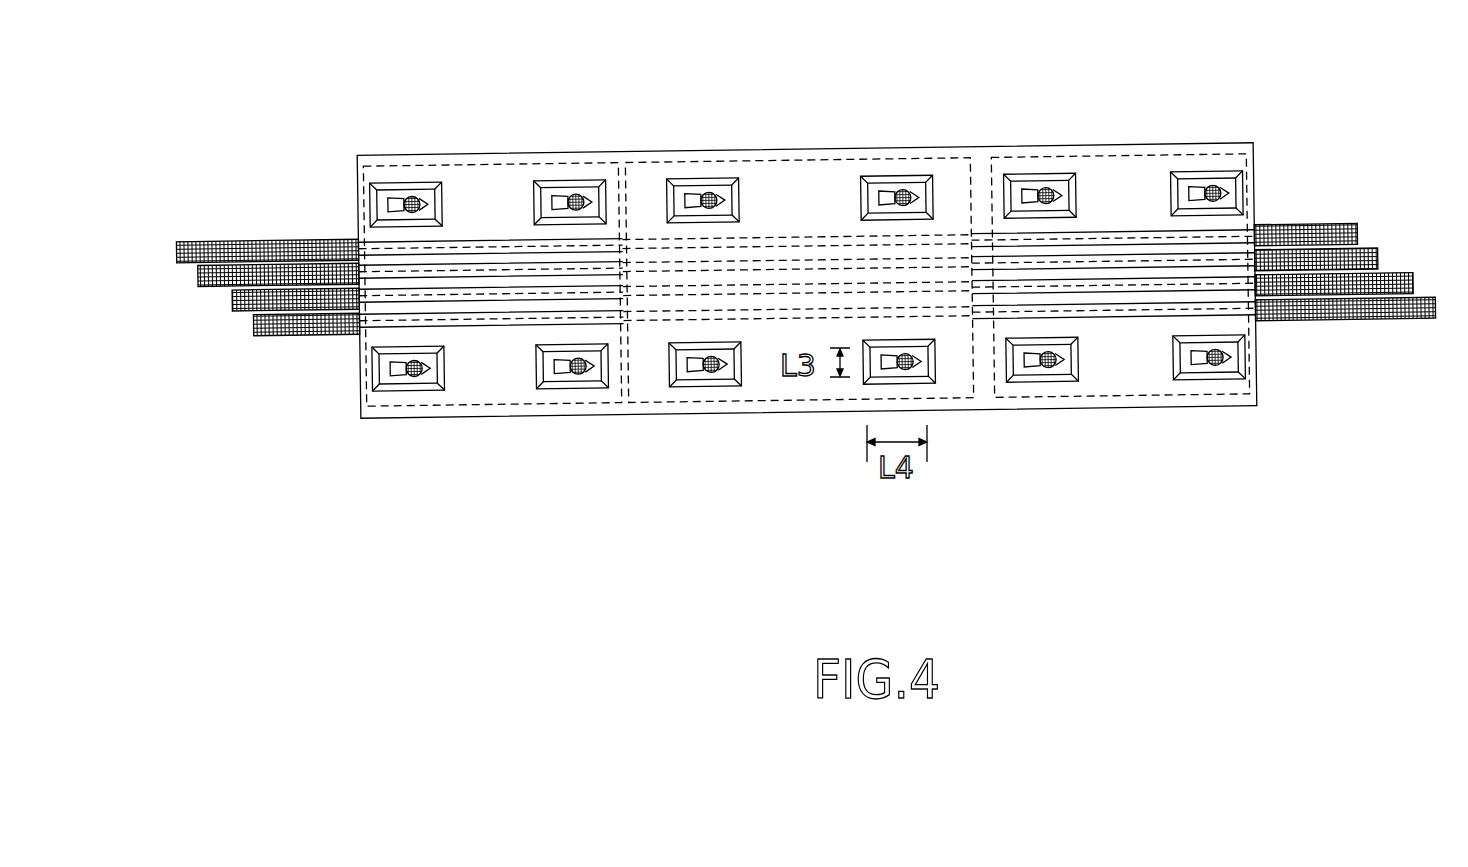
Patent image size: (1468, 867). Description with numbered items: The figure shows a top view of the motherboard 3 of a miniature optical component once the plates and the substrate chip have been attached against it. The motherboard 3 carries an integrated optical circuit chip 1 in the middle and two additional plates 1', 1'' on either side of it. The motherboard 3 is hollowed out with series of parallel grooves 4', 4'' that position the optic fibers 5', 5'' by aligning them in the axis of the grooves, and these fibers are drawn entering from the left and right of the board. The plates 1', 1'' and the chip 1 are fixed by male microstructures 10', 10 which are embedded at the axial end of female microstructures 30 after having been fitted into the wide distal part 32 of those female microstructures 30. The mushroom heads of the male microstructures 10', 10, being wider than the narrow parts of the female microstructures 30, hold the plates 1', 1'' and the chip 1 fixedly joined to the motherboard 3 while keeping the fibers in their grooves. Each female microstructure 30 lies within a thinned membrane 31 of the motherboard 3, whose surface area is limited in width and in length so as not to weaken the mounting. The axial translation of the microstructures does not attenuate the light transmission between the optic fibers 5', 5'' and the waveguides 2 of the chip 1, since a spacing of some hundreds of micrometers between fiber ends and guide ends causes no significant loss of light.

The integrated optical circuit chip 1 is at (799, 219).
The additional plate 1' is at (456, 214).
The additional plate 1'' is at (1120, 211).
The waveguides 2 is at (784, 322).
The motherboard 3 is at (957, 401).
The parallel grooves 4' is at (444, 394).
The parallel grooves 4'' is at (1163, 375).
The optic fibers 5' is at (256, 225).
The optic fibers 5'' is at (1344, 208).
The male microstructure 10 is at (749, 133).
The male microstructure 10' is at (455, 136).
The female microstructure 30 is at (572, 200).
The membrane 31 is at (1084, 381).
The wide distal part 32 is at (553, 372).